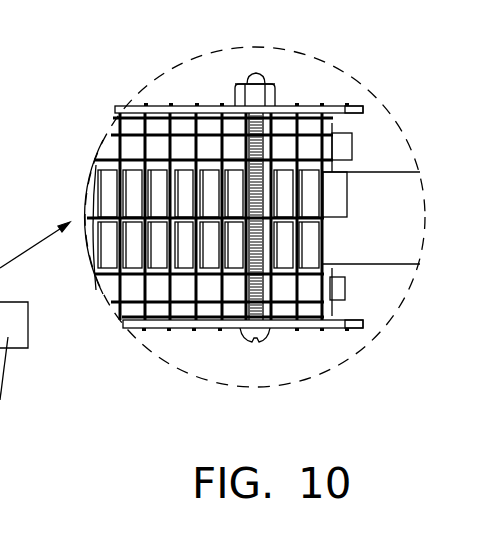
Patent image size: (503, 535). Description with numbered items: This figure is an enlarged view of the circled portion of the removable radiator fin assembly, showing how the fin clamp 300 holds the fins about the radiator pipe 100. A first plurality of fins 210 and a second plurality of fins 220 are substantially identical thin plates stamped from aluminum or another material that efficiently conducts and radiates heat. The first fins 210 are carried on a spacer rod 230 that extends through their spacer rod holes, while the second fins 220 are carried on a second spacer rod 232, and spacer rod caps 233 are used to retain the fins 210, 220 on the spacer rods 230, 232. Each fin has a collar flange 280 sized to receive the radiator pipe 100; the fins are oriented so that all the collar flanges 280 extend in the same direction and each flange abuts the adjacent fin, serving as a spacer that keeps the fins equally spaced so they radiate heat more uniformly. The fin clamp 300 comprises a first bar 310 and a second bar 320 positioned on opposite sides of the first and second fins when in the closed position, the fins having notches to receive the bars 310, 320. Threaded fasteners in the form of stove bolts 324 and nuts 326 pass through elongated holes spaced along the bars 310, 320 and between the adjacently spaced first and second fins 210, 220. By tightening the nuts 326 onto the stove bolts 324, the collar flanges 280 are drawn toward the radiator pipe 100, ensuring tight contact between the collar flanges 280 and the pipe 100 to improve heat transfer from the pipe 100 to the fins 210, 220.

The radiator pipe 100 is at (405, 209).
The fin clamp 300 is at (224, 88).
The first plurality of fins 210 is at (318, 107).
The second plurality of fins 220 is at (306, 323).
The spacer rod 230 is at (133, 150).
The second spacer rod 232 is at (132, 290).
The spacer rod caps 233 is at (346, 146).
The collar flange 280 is at (344, 188).
The first bar 310 is at (348, 108).
The second bar 320 is at (355, 329).
The stove bolts 324 is at (241, 332).
The nuts 326 is at (276, 88).